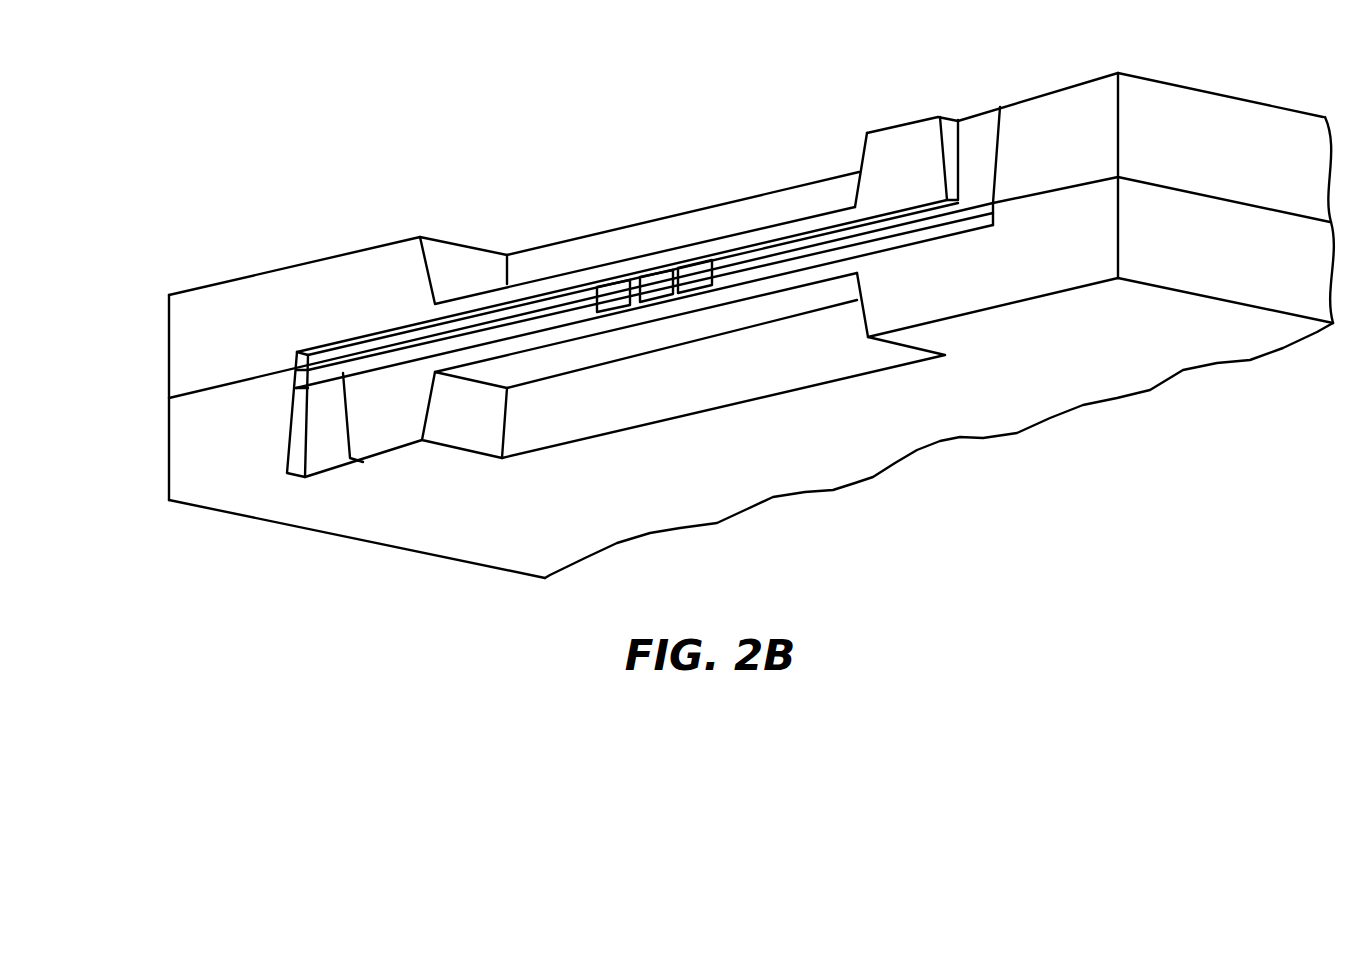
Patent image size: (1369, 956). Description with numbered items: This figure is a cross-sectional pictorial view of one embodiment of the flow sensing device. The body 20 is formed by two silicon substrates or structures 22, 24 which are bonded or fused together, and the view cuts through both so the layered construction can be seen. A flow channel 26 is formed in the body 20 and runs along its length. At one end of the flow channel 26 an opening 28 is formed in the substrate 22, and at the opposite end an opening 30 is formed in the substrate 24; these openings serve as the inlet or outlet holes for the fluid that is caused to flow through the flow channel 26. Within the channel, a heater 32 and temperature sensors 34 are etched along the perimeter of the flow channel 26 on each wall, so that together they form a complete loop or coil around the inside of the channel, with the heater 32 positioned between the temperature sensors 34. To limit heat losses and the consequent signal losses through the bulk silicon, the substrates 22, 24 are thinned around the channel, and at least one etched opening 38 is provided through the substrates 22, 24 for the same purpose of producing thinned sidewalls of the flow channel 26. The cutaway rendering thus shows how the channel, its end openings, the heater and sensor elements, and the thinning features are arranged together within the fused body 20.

The body 20 is at (237, 158).
The silicon substrate 22 is at (200, 333).
The silicon substrate 24 is at (190, 437).
The flow channel 26 is at (433, 336).
The opening 28 is at (977, 133).
The opening 30 is at (324, 443).
The heater 32 is at (657, 285).
The temperature sensors 34 is at (613, 293).
The etched opening 38 is at (596, 357).